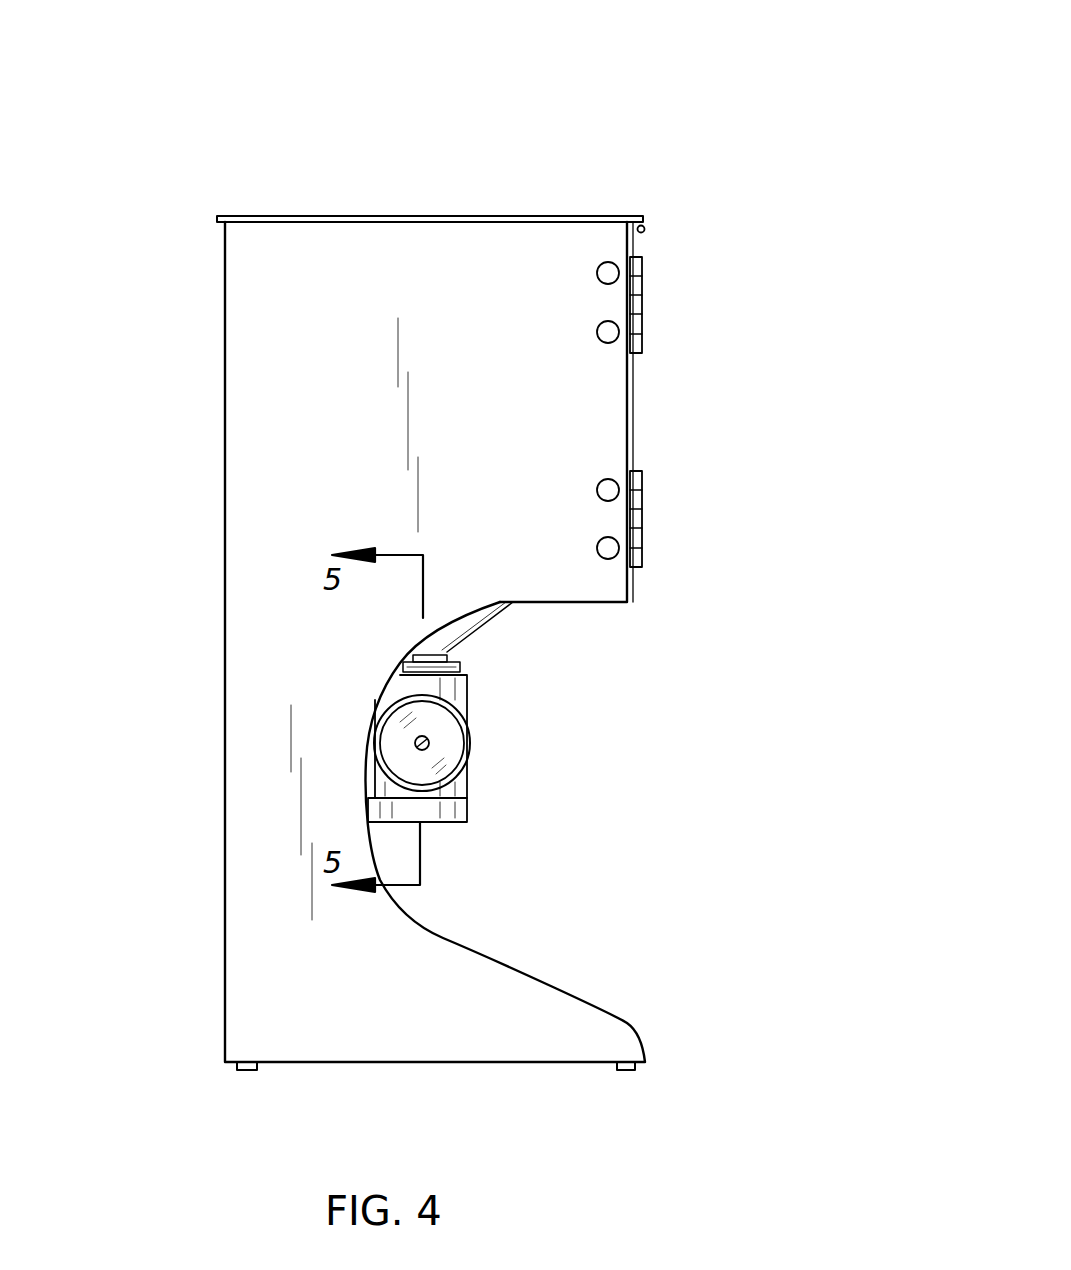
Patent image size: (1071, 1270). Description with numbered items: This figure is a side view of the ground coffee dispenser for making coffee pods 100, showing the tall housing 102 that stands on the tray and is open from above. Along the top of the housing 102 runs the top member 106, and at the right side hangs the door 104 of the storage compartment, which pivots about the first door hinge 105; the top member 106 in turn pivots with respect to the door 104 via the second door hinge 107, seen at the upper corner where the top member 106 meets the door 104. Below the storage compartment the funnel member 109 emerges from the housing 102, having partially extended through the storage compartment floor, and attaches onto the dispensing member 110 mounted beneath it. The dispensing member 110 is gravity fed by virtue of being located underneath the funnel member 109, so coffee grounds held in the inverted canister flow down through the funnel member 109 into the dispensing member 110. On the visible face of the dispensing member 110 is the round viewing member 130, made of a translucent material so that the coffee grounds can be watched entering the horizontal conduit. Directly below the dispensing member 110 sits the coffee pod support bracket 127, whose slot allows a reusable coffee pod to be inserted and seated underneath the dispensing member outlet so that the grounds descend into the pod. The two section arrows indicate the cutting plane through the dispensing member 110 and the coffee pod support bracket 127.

The ground coffee dispenser for making coffee pods 100 is at (637, 118).
The housing 102 is at (250, 424).
The door 104 is at (631, 390).
The first door hinge 105 is at (636, 290).
The top member 106 is at (410, 216).
The second door hinge 107 is at (648, 229).
The funnel member 109 is at (490, 627).
The dispensing member 110 is at (465, 695).
The coffee pod support bracket 127 is at (468, 805).
The viewing member 130 is at (450, 746).